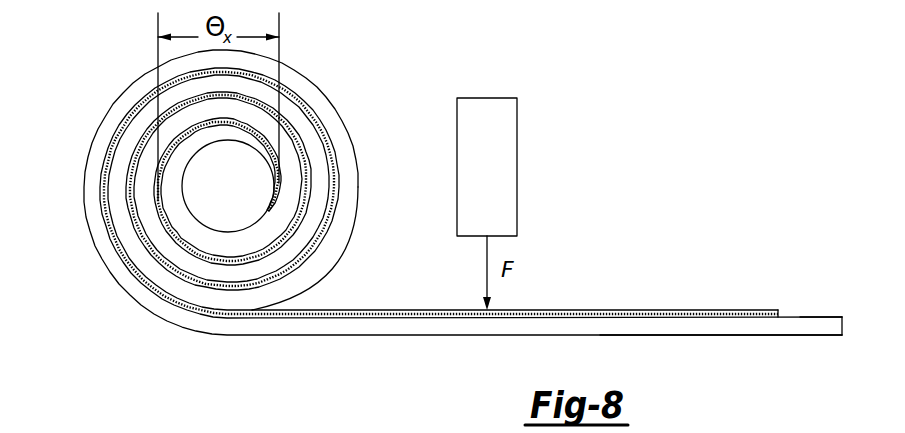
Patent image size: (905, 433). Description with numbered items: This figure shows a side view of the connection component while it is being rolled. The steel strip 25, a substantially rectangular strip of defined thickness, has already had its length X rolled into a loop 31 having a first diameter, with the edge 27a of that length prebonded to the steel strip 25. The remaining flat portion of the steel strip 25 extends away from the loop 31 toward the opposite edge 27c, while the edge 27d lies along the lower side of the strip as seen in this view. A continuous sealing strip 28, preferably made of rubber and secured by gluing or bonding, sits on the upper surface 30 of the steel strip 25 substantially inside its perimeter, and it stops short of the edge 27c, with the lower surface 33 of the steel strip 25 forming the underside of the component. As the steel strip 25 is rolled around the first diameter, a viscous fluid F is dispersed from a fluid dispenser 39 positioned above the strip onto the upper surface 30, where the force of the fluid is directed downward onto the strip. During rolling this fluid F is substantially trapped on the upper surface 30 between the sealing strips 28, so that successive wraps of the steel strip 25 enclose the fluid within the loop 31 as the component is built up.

The steel strip 25 is at (807, 316).
The edge of the steel strip 27a is at (267, 208).
The edge of the steel strip 27c is at (843, 328).
The edge of the steel strip 27d is at (417, 336).
The sealing strip 28 is at (678, 308).
The upper surface of the steel strip 30 is at (832, 316).
The loop 31 is at (168, 202).
The lower surface of the steel strip 33 is at (675, 336).
The fluid dispenser 39 is at (483, 112).